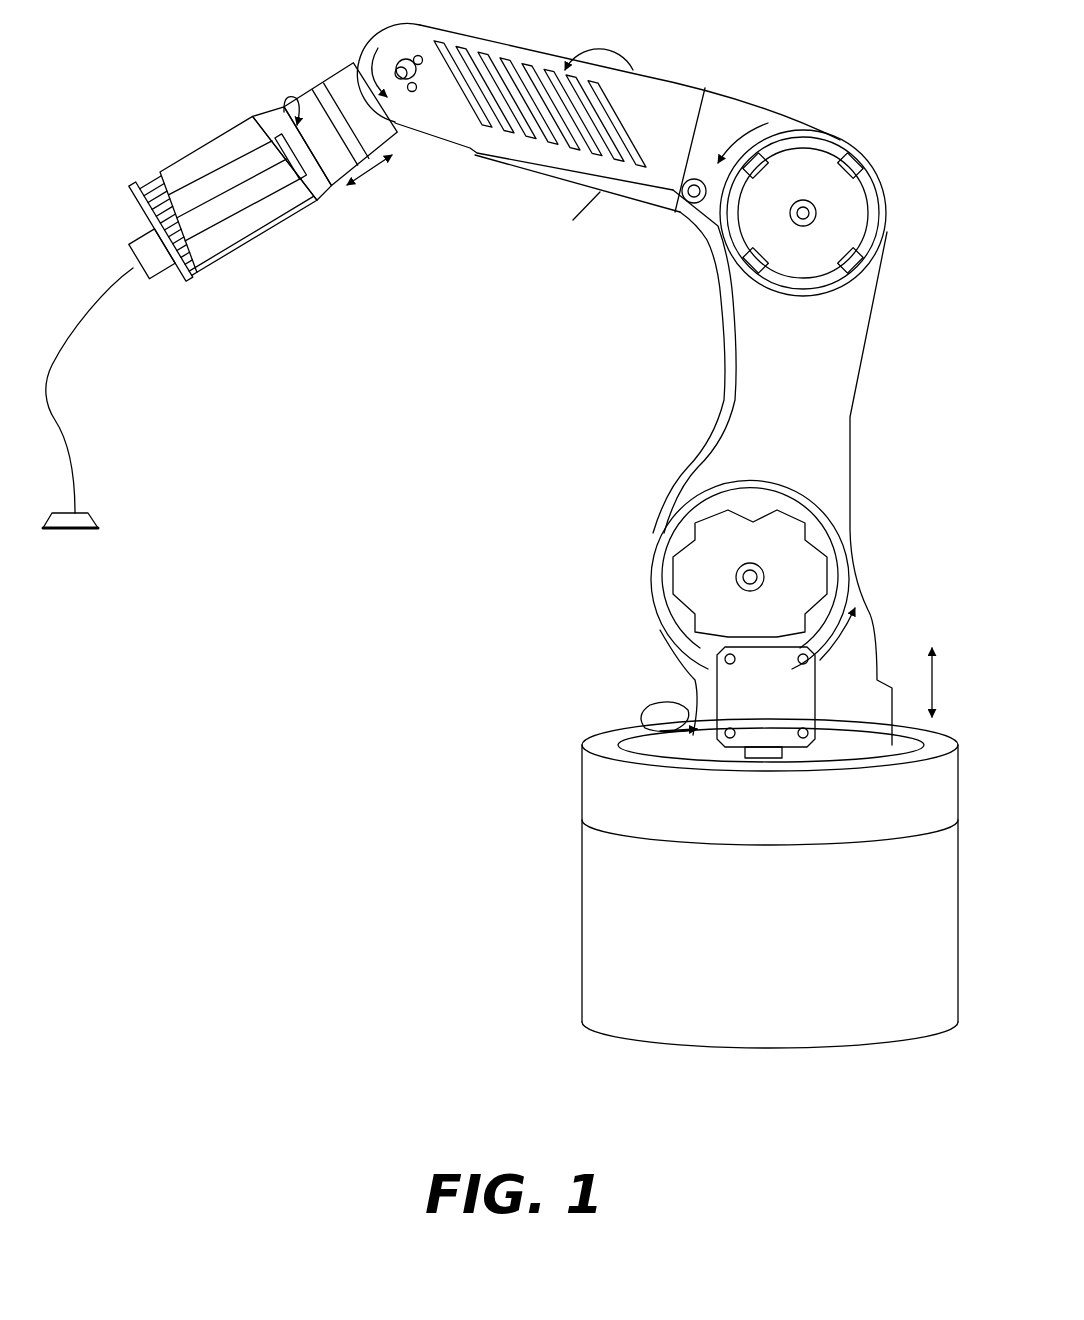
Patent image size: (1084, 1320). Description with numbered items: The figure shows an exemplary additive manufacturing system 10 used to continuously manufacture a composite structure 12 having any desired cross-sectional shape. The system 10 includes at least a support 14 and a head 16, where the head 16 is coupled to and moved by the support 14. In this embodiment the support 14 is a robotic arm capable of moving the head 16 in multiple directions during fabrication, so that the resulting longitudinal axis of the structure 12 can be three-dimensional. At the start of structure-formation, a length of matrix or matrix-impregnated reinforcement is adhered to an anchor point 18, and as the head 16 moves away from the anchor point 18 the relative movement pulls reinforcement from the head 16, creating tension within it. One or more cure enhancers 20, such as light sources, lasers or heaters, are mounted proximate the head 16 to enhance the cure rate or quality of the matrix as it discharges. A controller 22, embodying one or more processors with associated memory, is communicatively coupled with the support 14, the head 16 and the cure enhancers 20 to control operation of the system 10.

The system 10 is at (500, 535).
The composite structure 12 is at (77, 475).
The support 14 is at (799, 437).
The head 16 is at (257, 287).
The anchor point 18 is at (63, 527).
The cure enhancer 20 is at (167, 273).
The controller 22 is at (781, 701).